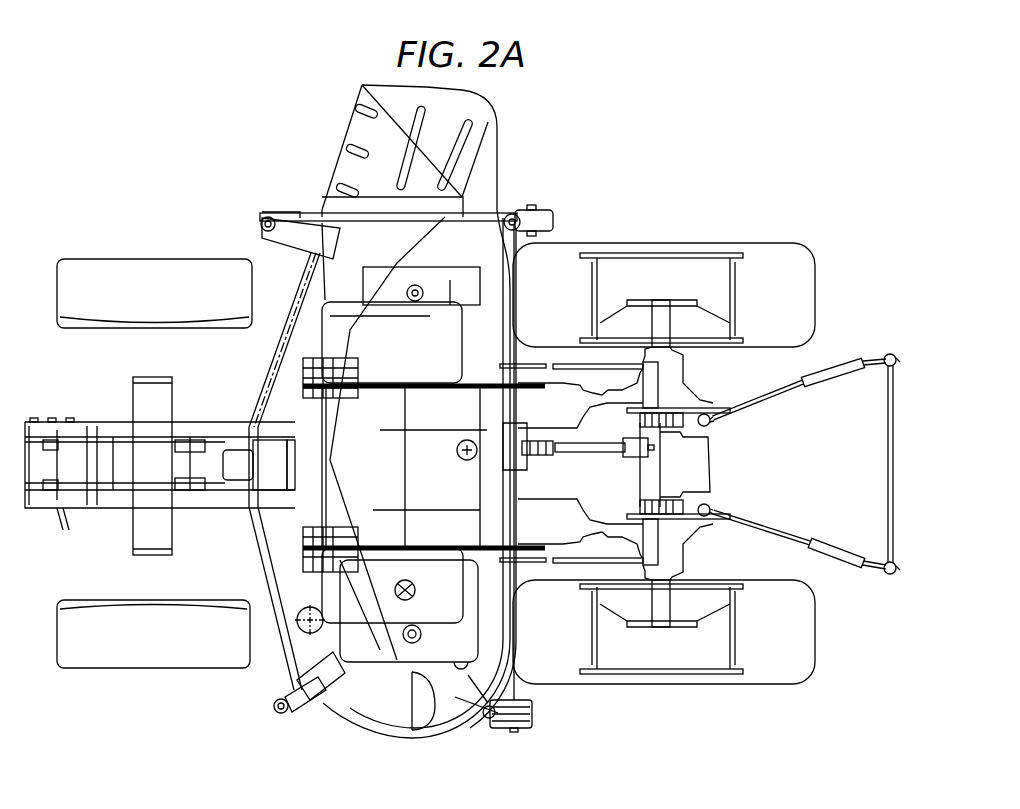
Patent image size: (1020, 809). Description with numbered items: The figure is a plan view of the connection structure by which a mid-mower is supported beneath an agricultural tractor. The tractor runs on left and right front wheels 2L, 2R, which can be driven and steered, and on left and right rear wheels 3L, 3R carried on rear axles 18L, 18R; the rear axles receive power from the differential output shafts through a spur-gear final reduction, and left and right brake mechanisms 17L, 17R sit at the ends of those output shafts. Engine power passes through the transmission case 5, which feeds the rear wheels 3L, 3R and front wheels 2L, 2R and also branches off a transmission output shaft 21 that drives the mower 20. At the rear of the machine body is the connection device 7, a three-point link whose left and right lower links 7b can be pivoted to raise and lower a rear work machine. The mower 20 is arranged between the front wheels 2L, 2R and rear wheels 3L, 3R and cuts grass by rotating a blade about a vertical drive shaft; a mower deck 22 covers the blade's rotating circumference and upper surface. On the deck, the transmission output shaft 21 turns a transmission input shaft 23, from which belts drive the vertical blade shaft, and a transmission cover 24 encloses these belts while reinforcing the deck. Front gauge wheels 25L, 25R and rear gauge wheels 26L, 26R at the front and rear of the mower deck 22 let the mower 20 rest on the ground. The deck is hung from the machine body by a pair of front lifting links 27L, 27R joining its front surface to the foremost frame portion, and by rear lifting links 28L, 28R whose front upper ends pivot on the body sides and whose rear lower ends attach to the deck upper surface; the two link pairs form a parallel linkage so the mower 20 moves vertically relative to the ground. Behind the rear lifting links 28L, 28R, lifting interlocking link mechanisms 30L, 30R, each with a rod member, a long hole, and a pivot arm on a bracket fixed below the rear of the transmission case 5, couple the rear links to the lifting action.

The mower 20 is at (301, 149).
The right front wheel 2R is at (118, 257).
The left front wheel 2L is at (210, 662).
The right rear wheel 3R is at (696, 244).
The left rear wheel 3L is at (774, 683).
The transmission case 5 is at (711, 459).
The connection device 7 is at (859, 331).
The lower link 7b is at (792, 390).
The right brake mechanism 17R is at (687, 399).
The left brake mechanism 17L is at (685, 534).
The right rear axle 18R is at (664, 316).
The left rear axle 18L is at (664, 608).
The transmission output shaft 21 is at (633, 459).
The mower deck 22 is at (390, 718).
The transmission input shaft 23 is at (541, 456).
The transmission cover 24 is at (381, 648).
The right front gauge wheel 25R is at (298, 212).
The left front gauge wheel 25L is at (305, 713).
The right rear gauge wheel 26R is at (547, 210).
The left rear gauge wheel 26L is at (534, 714).
The right front lifting link 27R is at (126, 436).
The left front lifting link 27L is at (146, 491).
The right rear lifting link 28R is at (521, 366).
The left rear lifting link 28L is at (527, 566).
The right lifting interlocking link mechanism 30R is at (588, 353).
The left lifting interlocking link mechanism 30L is at (584, 574).